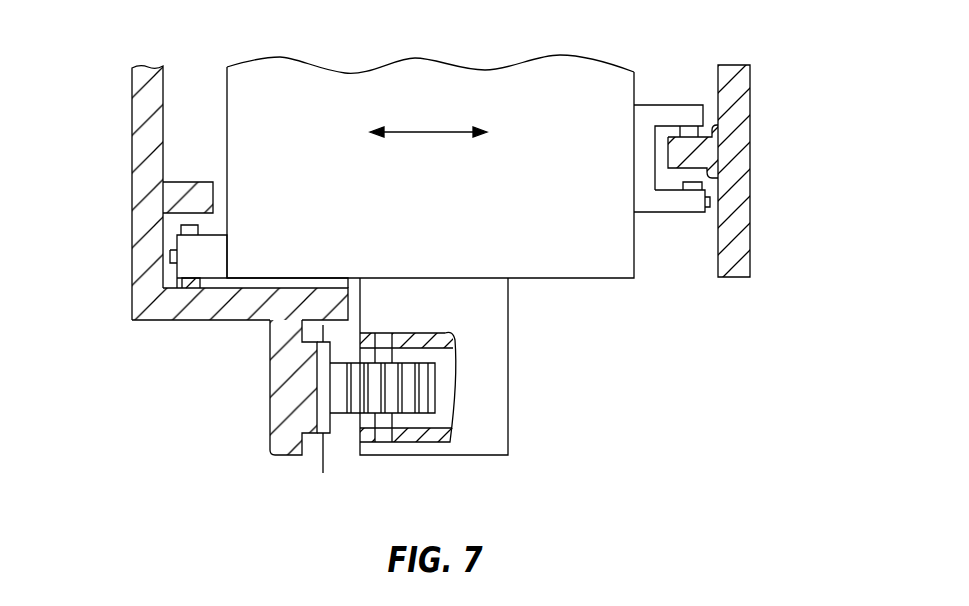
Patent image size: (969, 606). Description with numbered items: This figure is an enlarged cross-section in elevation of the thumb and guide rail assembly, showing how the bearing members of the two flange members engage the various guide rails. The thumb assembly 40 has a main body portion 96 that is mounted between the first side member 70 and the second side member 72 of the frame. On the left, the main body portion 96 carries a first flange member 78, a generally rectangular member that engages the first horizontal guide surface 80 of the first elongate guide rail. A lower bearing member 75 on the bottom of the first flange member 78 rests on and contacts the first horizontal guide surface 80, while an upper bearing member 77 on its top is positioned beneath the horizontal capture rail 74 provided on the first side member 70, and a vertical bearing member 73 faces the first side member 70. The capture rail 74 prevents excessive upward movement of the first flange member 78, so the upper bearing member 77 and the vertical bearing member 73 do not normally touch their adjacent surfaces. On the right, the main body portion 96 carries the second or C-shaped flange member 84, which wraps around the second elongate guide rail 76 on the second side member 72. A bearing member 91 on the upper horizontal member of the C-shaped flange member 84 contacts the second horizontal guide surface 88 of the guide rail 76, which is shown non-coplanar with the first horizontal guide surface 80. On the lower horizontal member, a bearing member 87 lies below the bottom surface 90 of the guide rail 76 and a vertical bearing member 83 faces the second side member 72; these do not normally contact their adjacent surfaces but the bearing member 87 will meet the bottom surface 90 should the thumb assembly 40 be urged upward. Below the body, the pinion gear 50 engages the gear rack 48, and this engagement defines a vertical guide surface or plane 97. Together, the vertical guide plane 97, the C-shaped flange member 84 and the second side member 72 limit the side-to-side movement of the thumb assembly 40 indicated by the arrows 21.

The arrows 21 is at (432, 165).
The thumb assembly 40 is at (362, 30).
The gear rack 48 is at (308, 457).
The pinion gear 50 is at (528, 388).
The first side member 70 is at (132, 113).
The second side member 72 is at (737, 63).
The vertical bearing member 73 is at (172, 256).
The horizontal capture rail 74 is at (262, 183).
The lower bearing member 75 is at (148, 318).
The second elongate guide rail 76 is at (600, 158).
The upper bearing member 77 is at (187, 225).
The first flange member 78 is at (110, 292).
The first horizontal guide surface 80 is at (290, 285).
The vertical bearing member 83 is at (709, 212).
The second or C-shaped flange member 84 is at (660, 40).
The bearing member 87 is at (712, 186).
The second horizontal guide surface 88 is at (722, 132).
The bottom surface of second guide rail 90 is at (722, 177).
The bearing member 91 is at (677, 128).
The main body portion 96 is at (543, 55).
The vertical guide surface or plane 97 is at (360, 490).